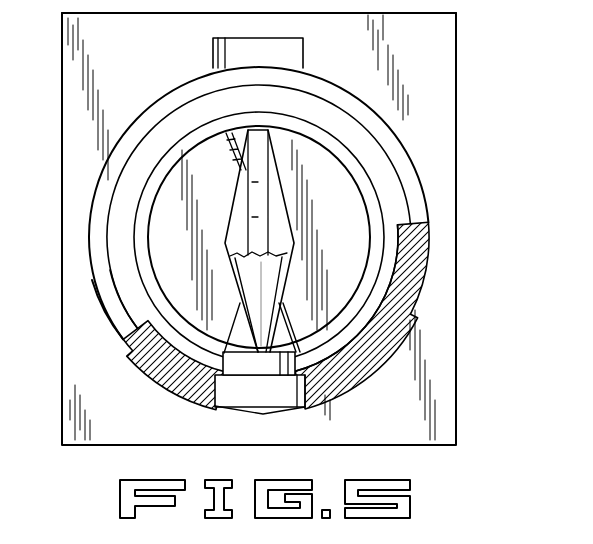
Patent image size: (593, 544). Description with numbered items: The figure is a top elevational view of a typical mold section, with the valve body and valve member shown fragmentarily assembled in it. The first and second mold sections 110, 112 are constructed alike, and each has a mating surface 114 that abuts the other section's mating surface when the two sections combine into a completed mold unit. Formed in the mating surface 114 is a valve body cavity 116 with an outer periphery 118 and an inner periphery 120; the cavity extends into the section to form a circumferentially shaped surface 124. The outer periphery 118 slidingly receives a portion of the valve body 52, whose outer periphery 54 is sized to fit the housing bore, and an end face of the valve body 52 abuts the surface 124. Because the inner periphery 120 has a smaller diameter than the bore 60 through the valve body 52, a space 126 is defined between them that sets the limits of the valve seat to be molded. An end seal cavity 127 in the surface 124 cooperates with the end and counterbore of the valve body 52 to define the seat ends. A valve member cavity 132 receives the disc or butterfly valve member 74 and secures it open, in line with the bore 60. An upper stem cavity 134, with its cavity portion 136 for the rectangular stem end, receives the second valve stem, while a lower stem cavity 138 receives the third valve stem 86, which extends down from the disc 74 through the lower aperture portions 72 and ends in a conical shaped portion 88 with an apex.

The first mold section 110 is at (311, 229).
The second mold section 112 is at (447, 103).
The mating surface 114 is at (438, 38).
The valve body cavity 116 is at (99, 203).
The circumferentially shaped surface 124 is at (97, 228).
The end seal cavity 127 is at (104, 257).
The outer periphery 118 is at (99, 288).
The space 126 is at (372, 224).
The inner periphery 120 is at (148, 236).
The valve body 52 is at (412, 270).
The outer periphery 54 is at (397, 347).
The bore 60 is at (347, 344).
The cavity portion 136 is at (224, 54).
The lower aperture portions 72 is at (221, 389).
The third valve stem 86 is at (238, 386).
The conical shaped portion 88 is at (253, 408).
The valve member cavity 132 is at (242, 196).
The upper stem cavity 134 is at (232, 151).
The disc or butterfly valve member 74 is at (282, 278).
The lower stem cavity 138 is at (234, 328).